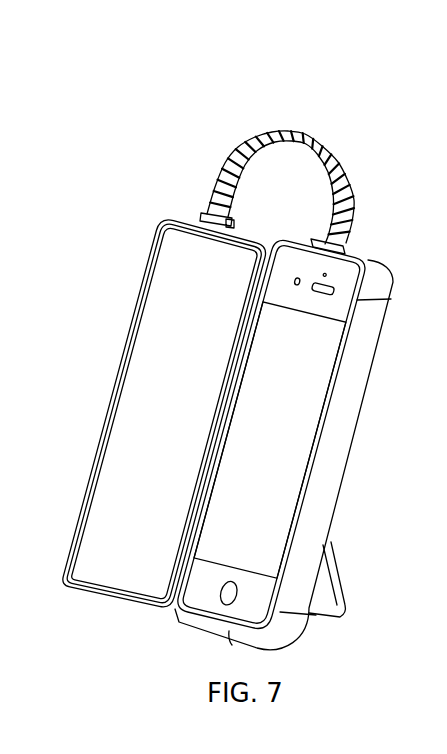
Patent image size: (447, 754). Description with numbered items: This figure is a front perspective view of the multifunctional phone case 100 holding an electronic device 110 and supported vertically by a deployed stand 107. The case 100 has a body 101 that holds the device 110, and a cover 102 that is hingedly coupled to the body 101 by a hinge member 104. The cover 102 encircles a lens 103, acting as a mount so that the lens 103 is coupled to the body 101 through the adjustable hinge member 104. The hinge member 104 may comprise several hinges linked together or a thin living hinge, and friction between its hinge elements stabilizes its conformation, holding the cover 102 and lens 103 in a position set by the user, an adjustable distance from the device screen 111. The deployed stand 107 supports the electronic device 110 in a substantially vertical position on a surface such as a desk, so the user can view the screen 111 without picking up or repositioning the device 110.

The case 100 is at (319, 100).
The body 101 is at (316, 523).
The cover 102 is at (130, 326).
The lens 103 is at (200, 326).
The hinge member 104 is at (228, 162).
The stand 107 is at (337, 593).
The electronic device 110 is at (335, 303).
The device screen 111 is at (285, 441).